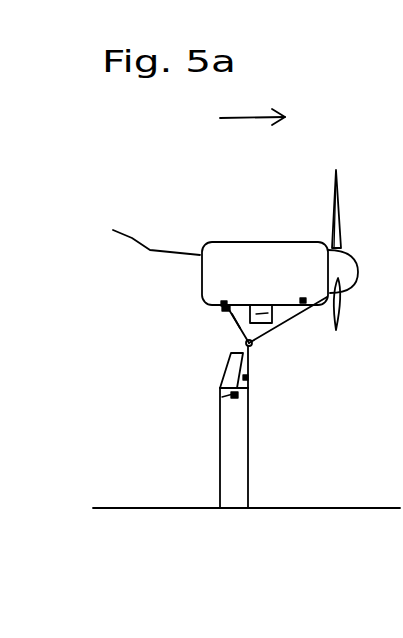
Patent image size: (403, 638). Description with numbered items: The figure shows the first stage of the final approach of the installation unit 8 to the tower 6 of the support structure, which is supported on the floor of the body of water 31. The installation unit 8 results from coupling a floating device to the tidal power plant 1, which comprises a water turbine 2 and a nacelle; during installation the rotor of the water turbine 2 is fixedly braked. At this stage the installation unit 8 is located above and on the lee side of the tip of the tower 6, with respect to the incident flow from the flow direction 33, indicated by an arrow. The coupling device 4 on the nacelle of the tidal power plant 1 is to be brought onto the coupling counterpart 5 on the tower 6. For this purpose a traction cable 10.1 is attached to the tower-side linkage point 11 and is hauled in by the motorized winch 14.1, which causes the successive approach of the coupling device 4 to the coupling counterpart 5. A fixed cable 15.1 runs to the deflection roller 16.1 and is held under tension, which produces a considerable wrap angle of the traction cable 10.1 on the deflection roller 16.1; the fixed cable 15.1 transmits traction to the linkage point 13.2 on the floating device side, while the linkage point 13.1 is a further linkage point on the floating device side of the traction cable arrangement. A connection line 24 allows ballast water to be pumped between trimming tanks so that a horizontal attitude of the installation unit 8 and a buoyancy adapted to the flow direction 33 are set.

The tidal power plant 1 is at (362, 278).
The water turbine 2 is at (342, 266).
The coupling device 4 is at (252, 341).
The coupling counterpart 5 is at (247, 358).
The tower 6 is at (235, 463).
The installation unit 8 is at (272, 287).
The traction cable 10.1 is at (238, 318).
The tower-side linkage point 11 is at (221, 399).
The linkage point on the floating device side 13.1 is at (223, 302).
The linkage point on the floating device side 13.2 is at (303, 299).
The motorized winch 14.1 is at (226, 308).
The fixed cable 15.1 is at (256, 342).
The deflection roller 16.1 is at (237, 347).
The connection line 24 is at (132, 238).
The floor of the body of water 31 is at (138, 509).
The flow direction 33 is at (247, 119).